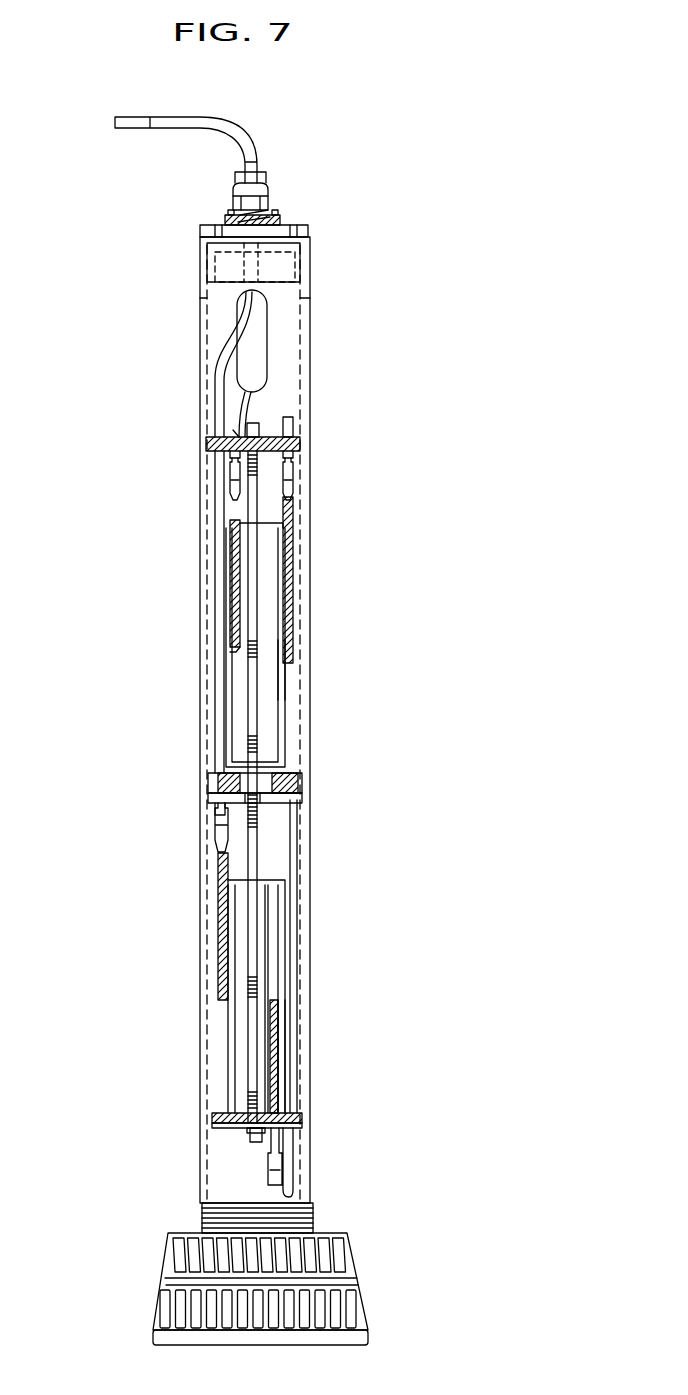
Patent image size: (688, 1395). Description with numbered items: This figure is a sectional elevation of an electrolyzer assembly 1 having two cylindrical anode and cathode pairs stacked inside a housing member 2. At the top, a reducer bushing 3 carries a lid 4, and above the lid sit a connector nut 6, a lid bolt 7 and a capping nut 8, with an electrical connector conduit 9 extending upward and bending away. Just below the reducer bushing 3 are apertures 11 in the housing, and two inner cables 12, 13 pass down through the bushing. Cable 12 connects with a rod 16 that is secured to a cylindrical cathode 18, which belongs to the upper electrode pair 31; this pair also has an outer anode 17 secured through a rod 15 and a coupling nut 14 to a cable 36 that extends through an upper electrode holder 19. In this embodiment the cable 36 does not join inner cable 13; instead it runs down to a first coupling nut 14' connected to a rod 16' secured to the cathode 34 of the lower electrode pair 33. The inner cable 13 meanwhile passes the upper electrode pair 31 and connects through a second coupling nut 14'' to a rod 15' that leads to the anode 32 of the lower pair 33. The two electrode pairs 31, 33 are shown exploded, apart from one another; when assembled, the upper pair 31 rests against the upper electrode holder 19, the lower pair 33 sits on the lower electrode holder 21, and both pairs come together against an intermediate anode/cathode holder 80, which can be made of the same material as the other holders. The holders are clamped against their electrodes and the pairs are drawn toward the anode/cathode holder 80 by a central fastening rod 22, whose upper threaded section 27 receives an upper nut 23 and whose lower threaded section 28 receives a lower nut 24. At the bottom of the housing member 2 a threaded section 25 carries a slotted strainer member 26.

The electrolyzer assembly 1 is at (466, 204).
The housing member 2 is at (314, 826).
The reducer bushing 3 is at (197, 217).
The lid 4 is at (313, 232).
The connector nut 6 is at (232, 210).
The lid bolt 7 is at (281, 220).
The capping nut 8 is at (277, 200).
The electrical connector conduit 9 is at (252, 142).
The apertures 11 is at (270, 330).
The inner cable 12 is at (250, 397).
The inner cable 13 is at (218, 382).
The coupling nut 14 is at (297, 478).
The first coupling nut 14' is at (324, 1162).
The second coupling nut 14'' is at (175, 825).
The rod 15 is at (324, 579).
The rod 15' is at (182, 926).
The rod 16 is at (190, 571).
The rod 16' is at (328, 1056).
The outer anode 17 is at (294, 659).
The cylindrical cathode 18 is at (284, 713).
The upper electrode holder 19 is at (206, 445).
The lower electrode holder 21 is at (212, 1116).
The fastening rod 22 is at (259, 864).
The upper nut 23 is at (238, 434).
The lower nut 24 is at (250, 1136).
The threaded section 25 is at (315, 1220).
The strainer member 26 is at (354, 1243).
The upper threaded section 27 is at (262, 425).
The lower threaded section 28 is at (248, 1145).
The upper electrode pair 31 is at (330, 613).
The anode 32 is at (292, 1088).
The lower electrode pair 33 is at (158, 997).
The cathode 34 is at (284, 1060).
The cable 36 is at (295, 428).
The anode/cathode holder 80 is at (300, 783).